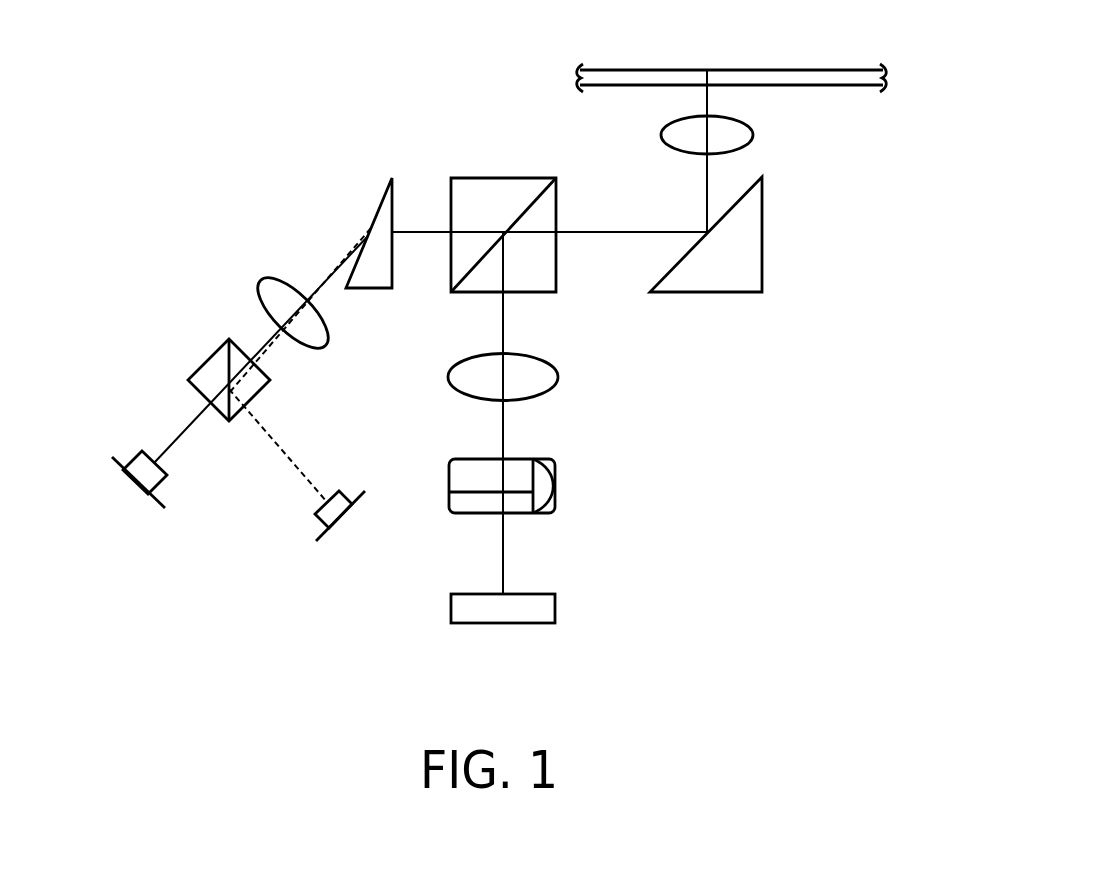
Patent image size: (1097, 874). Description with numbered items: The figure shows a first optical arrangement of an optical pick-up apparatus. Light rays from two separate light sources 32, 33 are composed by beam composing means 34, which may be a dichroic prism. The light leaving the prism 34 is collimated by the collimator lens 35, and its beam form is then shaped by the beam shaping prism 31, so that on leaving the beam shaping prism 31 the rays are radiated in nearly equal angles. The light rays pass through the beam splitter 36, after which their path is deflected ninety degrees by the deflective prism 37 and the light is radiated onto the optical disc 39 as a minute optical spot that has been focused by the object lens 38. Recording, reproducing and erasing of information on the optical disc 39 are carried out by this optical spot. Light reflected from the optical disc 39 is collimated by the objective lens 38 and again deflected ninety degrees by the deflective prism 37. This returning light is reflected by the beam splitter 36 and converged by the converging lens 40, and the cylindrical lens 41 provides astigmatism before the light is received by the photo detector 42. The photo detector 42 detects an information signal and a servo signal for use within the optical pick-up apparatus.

The beam shaping prism 31 is at (372, 221).
The light source 32 is at (340, 517).
The light source 33 is at (112, 458).
The beam composing means 34 is at (207, 358).
The collimator lens 35 is at (253, 290).
The beam splitter 36 is at (507, 173).
The deflective prism 37 is at (762, 238).
The objective lens 38 is at (757, 137).
The optical disc 39 is at (757, 70).
The converging lens 40 is at (558, 378).
The cylindrical lens 41 is at (557, 480).
The photo detector 42 is at (555, 602).